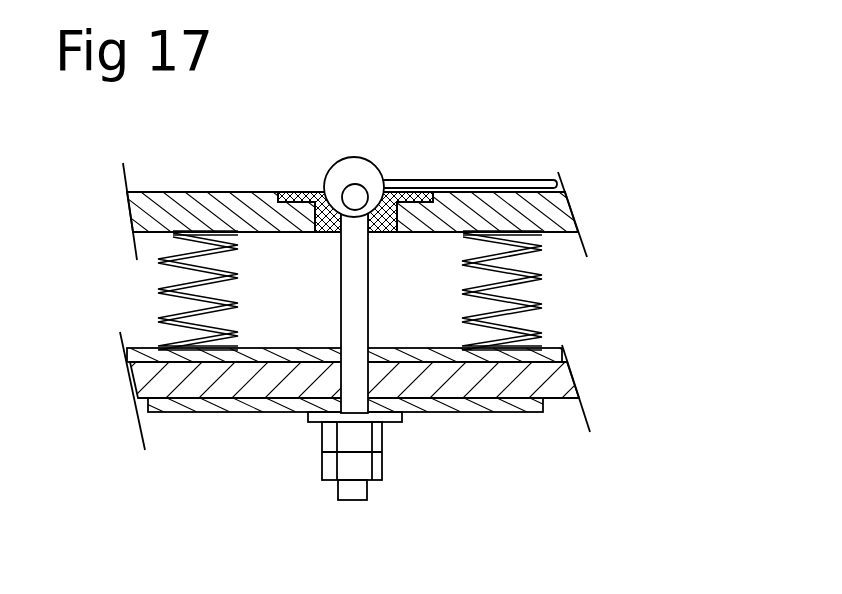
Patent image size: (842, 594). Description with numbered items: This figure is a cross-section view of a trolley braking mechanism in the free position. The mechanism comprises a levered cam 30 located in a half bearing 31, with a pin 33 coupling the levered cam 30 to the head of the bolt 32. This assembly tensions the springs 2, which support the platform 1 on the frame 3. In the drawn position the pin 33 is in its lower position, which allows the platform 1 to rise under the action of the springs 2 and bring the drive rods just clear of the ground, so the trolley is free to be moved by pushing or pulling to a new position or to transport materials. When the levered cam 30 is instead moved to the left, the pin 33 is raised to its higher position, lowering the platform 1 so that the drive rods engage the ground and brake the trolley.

The platform 1 is at (208, 212).
The springs 2 is at (542, 277).
The frame 3 is at (462, 403).
The levered cam 30 is at (438, 183).
The half bearing 31 is at (318, 196).
The bolt 32 is at (352, 260).
The pin 33 is at (356, 196).